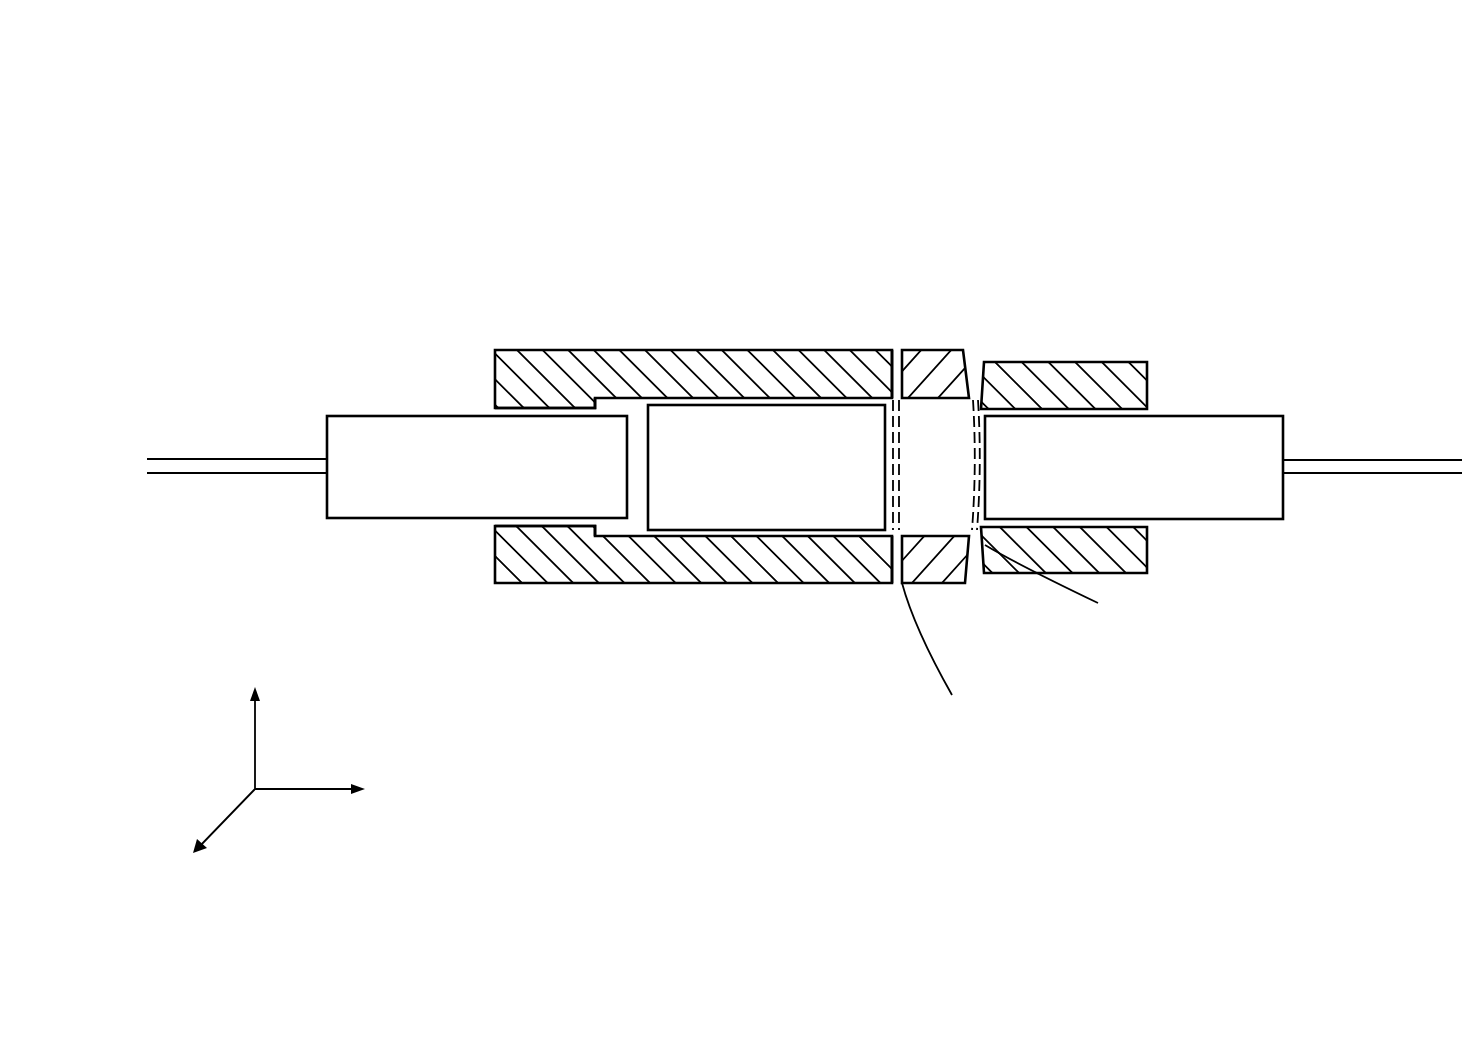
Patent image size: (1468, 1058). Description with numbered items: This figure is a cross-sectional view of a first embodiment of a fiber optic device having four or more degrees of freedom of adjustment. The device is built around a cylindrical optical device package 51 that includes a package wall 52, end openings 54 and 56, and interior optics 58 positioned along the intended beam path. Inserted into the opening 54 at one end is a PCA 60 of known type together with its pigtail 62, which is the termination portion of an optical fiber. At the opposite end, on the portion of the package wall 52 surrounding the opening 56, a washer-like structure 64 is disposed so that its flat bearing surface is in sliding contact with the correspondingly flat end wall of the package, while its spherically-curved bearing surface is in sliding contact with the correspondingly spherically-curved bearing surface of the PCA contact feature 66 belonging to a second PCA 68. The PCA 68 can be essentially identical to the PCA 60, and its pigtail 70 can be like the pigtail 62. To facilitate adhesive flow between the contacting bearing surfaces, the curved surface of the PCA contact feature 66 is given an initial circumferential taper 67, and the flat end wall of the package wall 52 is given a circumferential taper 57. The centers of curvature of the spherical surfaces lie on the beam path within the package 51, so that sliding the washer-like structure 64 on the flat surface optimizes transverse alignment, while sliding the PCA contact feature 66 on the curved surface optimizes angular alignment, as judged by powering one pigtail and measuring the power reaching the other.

The optical device package 51 is at (804, 493).
The package wall 52 is at (547, 583).
The end opening 54 is at (493, 523).
The end opening 56 is at (886, 532).
The circumferential taper 57 is at (893, 366).
The interior optics 58 is at (726, 510).
The PCA 60 is at (357, 415).
The pigtail 62 is at (201, 457).
The washer-like structure 64 is at (935, 350).
The PCA contact feature 66 is at (1070, 362).
The circumferential taper 67 is at (975, 397).
The PCA 68 is at (1218, 415).
The pigtail 70 is at (1388, 458).